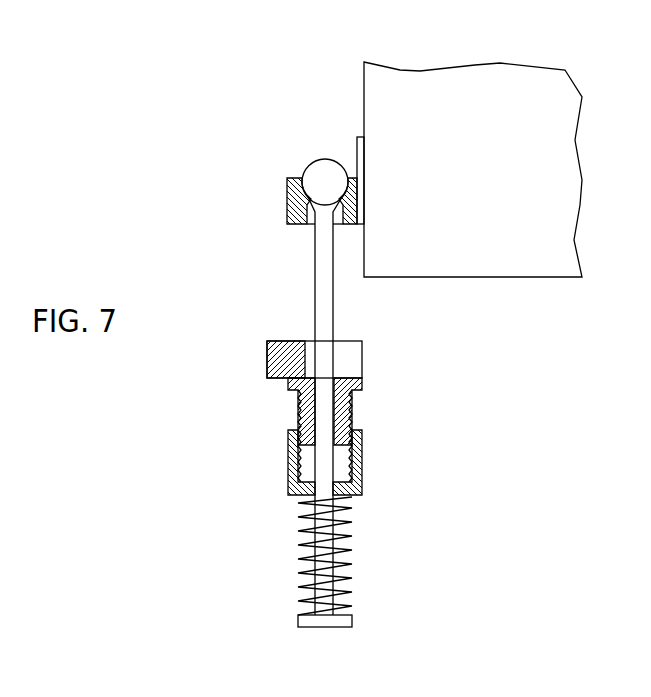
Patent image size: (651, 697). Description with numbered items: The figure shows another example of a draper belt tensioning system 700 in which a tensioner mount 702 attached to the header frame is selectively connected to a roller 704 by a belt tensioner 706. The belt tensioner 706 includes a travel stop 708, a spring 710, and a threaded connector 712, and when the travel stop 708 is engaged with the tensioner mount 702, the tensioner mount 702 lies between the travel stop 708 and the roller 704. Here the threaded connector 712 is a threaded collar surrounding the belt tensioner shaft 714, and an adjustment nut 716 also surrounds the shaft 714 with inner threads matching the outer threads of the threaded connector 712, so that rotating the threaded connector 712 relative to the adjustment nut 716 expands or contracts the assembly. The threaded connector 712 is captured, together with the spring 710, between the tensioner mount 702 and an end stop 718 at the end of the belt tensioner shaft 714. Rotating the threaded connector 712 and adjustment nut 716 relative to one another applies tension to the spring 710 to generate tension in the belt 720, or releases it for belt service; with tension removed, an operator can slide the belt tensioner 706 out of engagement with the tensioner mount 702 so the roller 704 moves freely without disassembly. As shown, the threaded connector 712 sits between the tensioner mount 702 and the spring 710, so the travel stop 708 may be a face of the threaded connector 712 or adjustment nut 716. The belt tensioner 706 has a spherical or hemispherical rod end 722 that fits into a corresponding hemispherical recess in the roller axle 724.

The belt tensioning system 700 is at (475, 343).
The tensioner mount 702 is at (282, 360).
The roller 704 is at (357, 145).
The belt tensioner 706 is at (316, 286).
The travel stop 708 is at (356, 376).
The spring 710 is at (352, 548).
The threaded connector 712 is at (344, 407).
The belt tensioner shaft 714 is at (312, 412).
The adjustment nut 716 is at (360, 478).
The end stop 718 is at (352, 622).
The belt 720 is at (483, 80).
The rod end 722 is at (316, 170).
The roller axle 724 is at (290, 214).